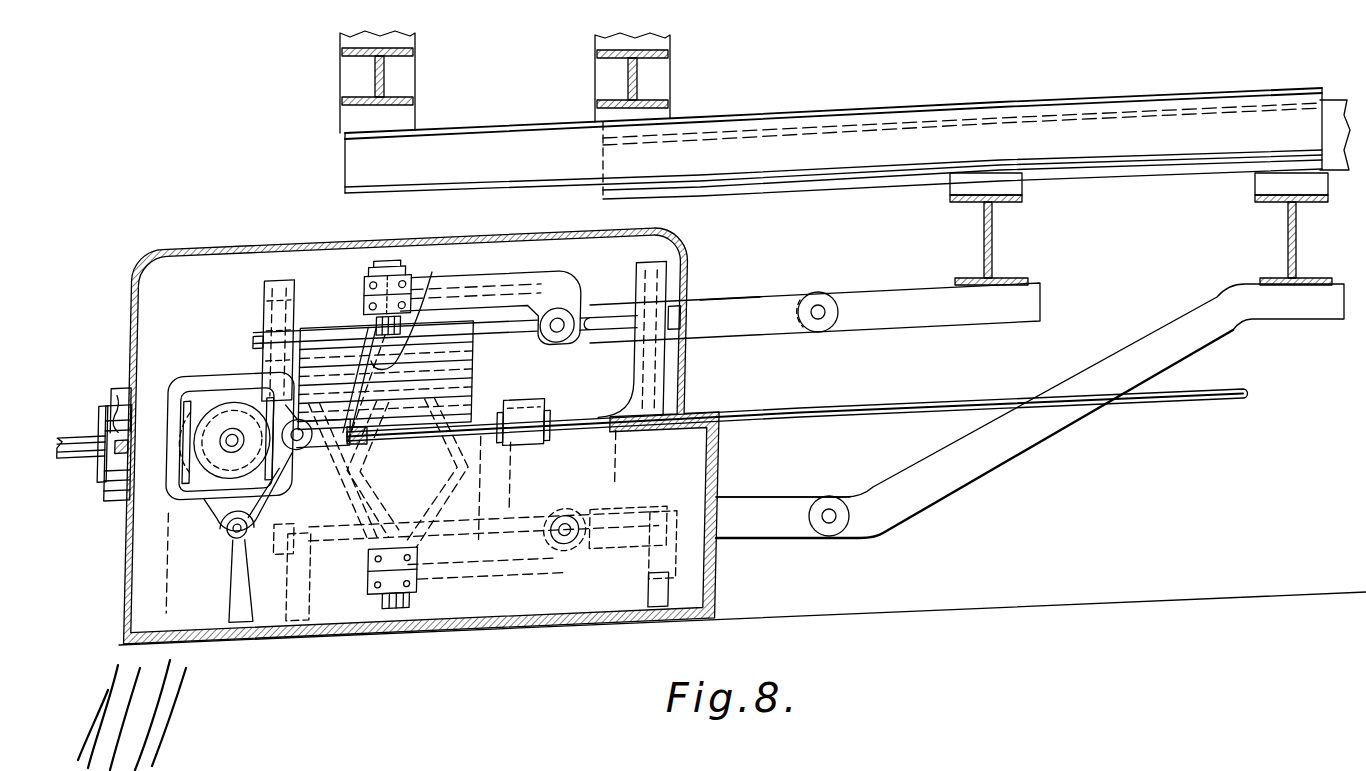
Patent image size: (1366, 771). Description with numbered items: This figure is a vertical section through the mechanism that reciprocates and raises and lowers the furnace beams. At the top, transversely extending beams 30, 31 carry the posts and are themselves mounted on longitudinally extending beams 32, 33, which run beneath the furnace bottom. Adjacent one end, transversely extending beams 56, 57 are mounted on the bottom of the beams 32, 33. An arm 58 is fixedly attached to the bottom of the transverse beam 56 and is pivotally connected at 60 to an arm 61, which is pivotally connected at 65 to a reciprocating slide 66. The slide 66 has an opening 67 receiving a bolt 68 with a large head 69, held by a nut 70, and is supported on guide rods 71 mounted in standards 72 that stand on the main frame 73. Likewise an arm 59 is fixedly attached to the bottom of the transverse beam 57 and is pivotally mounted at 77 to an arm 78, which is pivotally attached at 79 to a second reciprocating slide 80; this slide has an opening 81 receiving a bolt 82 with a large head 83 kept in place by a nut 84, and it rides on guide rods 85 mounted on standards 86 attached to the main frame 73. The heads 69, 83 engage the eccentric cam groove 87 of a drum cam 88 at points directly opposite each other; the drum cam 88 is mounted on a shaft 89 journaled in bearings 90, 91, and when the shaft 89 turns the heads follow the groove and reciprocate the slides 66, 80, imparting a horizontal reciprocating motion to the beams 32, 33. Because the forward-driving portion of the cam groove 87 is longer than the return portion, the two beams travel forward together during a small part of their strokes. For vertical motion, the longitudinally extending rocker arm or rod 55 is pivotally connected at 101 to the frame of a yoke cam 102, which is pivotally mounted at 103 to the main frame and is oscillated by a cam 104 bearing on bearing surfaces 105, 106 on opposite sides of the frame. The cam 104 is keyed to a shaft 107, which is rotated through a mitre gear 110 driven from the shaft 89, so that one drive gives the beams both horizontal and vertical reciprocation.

The transversely extending beam 30 is at (386, 76).
The transversely extending beam 31 is at (640, 77).
The longitudinally extending beam 32 is at (765, 172).
The longitudinally extending beam 33 is at (812, 183).
The rocker arm or rod 55 is at (945, 404).
The transversely extending beam 56 is at (995, 237).
The transversely extending beam 57 is at (1288, 235).
The arm 58 is at (885, 296).
The arm 59 is at (1120, 342).
The pivotal connection 60 is at (818, 300).
The arm 61 is at (722, 300).
The pivotal connection 65 is at (557, 332).
The reciprocating slide 66 is at (470, 285).
The opening 67 is at (360, 282).
The bolt 68 is at (361, 298).
The large head 69 is at (373, 322).
The nut 70 is at (385, 258).
The guide rods 71 is at (513, 328).
The standards 72 is at (263, 292).
The main frame 73 is at (718, 462).
The pivotal mounting 77 is at (829, 507).
The arm 78 is at (756, 537).
The pivotal attachment 79 is at (565, 515).
The reciprocating slide 80 is at (470, 580).
The opening 81 is at (370, 574).
The bolt 82 is at (372, 588).
The large head 83 is at (372, 550).
The nut 84 is at (383, 603).
The guide rods 85 is at (622, 540).
The standards 86 is at (650, 583).
The cam groove 87 is at (409, 309).
The drum cam 88 is at (468, 376).
The shaft 89 is at (75, 432).
The bearing 90 is at (112, 392).
The bearing 91 is at (538, 404).
The pivotal connection 101 is at (304, 422).
The yoke cam 102 is at (185, 392).
The pivotal mounting 103 is at (233, 540).
The cam 104 is at (215, 375).
The bearing surface 105 is at (196, 470).
The bearing surface 106 is at (240, 400).
The shaft 107 is at (218, 496).
The mitre gear 110 is at (172, 560).